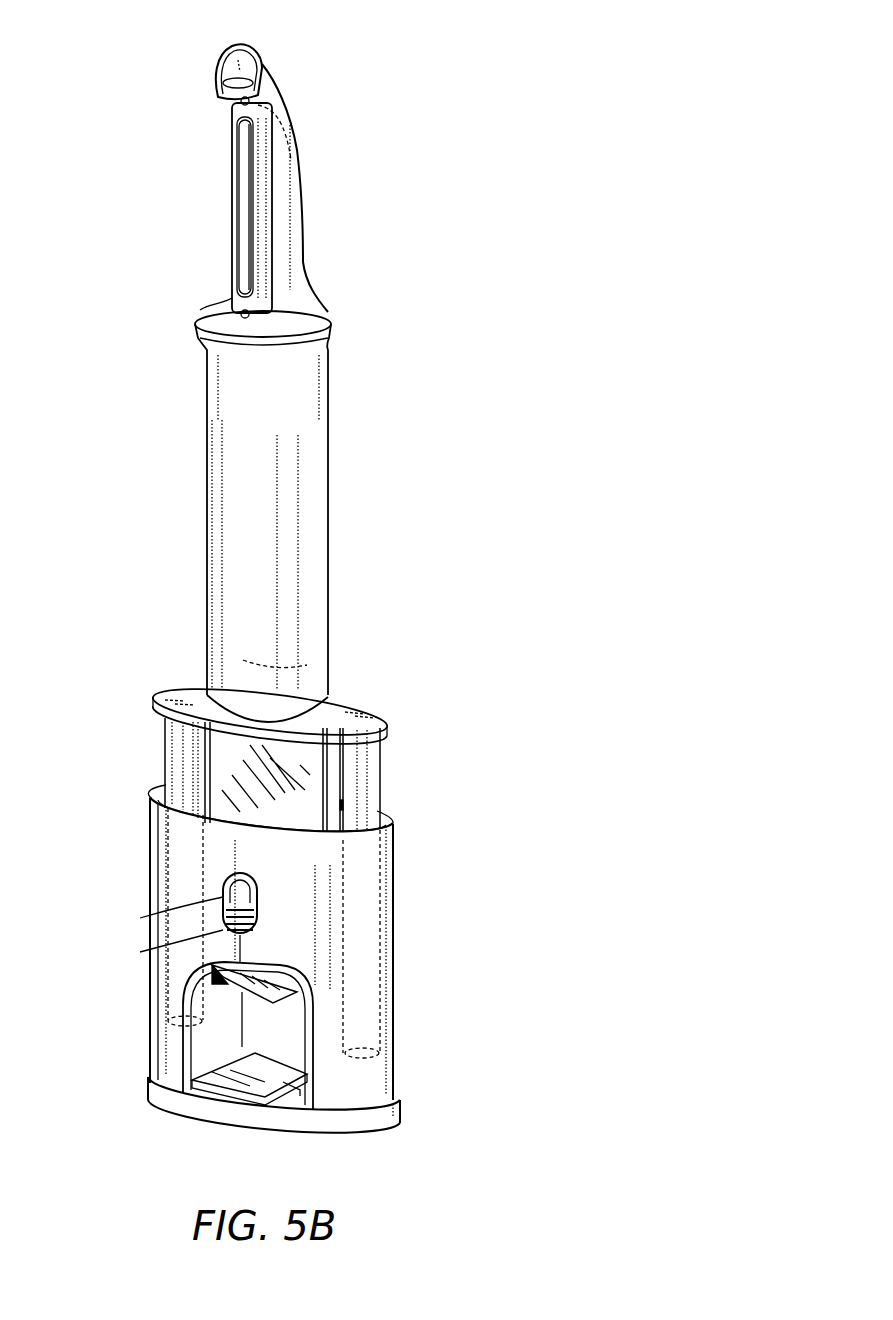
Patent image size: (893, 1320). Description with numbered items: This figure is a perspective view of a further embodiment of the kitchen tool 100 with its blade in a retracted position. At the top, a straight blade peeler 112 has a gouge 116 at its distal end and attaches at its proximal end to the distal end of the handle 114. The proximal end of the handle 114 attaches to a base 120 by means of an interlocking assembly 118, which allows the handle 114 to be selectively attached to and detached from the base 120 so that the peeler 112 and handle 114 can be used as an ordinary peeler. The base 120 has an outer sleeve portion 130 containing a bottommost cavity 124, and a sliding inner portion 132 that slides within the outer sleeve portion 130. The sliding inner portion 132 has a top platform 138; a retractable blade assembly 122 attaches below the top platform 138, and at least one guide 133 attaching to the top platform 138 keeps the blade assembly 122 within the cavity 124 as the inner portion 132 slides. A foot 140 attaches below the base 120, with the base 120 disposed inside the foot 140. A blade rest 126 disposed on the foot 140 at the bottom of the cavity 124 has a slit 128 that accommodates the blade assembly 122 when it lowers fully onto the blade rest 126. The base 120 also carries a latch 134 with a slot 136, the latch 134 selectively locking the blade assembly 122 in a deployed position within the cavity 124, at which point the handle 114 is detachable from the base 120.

The kitchen tool 100 is at (442, 184).
The straight blade peeler 112 is at (270, 193).
The handle 114 is at (314, 548).
The gouge 116 is at (247, 70).
The interlocking assembly 118 is at (370, 668).
The base 120 is at (462, 944).
The blade assembly 122 is at (305, 763).
The bottommost cavity 124 is at (205, 1040).
The blade rest 126 is at (233, 1082).
The slit 128 is at (277, 1090).
The outer sleeve portion 130 is at (372, 1080).
The sliding inner portion 132 is at (162, 755).
The guide 133 is at (360, 805).
The latch 134 is at (222, 935).
The slot 136 is at (222, 905).
The top platform 138 is at (362, 712).
The foot 140 is at (372, 1123).